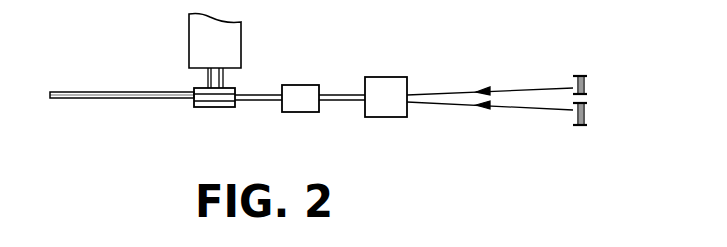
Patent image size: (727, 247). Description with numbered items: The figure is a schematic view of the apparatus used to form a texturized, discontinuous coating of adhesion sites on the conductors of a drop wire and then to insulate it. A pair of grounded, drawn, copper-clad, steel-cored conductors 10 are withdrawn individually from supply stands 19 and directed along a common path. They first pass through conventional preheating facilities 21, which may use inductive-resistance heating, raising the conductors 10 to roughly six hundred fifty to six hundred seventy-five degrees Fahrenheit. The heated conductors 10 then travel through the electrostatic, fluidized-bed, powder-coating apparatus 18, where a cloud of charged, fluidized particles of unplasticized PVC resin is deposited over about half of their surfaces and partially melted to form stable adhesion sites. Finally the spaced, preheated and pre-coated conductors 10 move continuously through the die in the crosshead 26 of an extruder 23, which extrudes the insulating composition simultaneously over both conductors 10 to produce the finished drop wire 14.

The conductors 10 is at (521, 86).
The drop wire 14 is at (103, 63).
The electrostatic, fluidized-bed, powder-coating apparatus 18 is at (305, 84).
The supply stands 19 is at (591, 80).
The preheating facilities 21 is at (388, 77).
The extruder 23 is at (237, 31).
The crosshead 26 is at (206, 107).